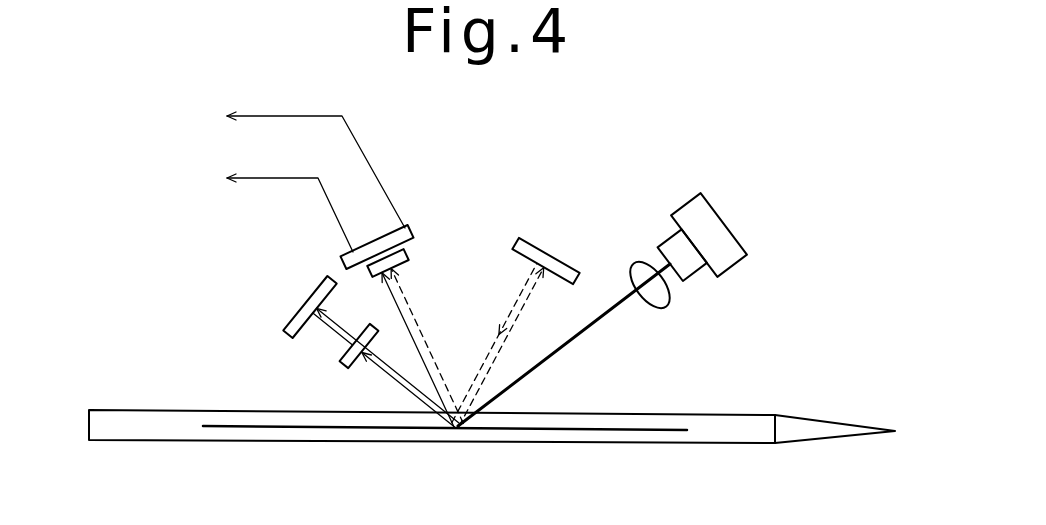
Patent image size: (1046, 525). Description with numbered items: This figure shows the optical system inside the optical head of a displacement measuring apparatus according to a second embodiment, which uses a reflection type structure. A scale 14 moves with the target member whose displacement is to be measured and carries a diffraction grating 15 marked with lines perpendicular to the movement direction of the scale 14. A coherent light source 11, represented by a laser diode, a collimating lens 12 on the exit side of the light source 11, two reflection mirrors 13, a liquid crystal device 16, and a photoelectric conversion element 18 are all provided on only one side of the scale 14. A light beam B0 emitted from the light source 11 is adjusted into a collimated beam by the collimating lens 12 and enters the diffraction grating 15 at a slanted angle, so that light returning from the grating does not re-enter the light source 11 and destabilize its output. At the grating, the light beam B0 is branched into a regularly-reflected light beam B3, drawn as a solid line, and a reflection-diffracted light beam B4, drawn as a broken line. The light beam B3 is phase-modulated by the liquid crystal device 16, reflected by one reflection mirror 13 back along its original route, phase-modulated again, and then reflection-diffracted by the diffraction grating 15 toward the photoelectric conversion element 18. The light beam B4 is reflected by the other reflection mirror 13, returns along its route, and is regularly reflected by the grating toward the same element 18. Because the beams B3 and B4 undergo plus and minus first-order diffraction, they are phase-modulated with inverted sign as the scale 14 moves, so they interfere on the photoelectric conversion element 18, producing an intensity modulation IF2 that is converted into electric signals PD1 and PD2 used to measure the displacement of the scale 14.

The coherent light source 11 is at (733, 225).
The collimating lens 12 is at (643, 262).
The reflection mirror 13 is at (307, 300).
The scale 14 is at (717, 445).
The diffraction grating 15 is at (658, 428).
The liquid crystal device 16 is at (347, 368).
The photoelectric conversion element 18 is at (417, 225).
The signal PD1 is at (281, 167).
The signal PD2 is at (255, 209).
The interference beam IF2 is at (428, 310).
The light beam B0 is at (564, 345).
The regularly-reflected light beam B3 is at (395, 377).
The reflection-diffracted light beam B4 is at (500, 355).